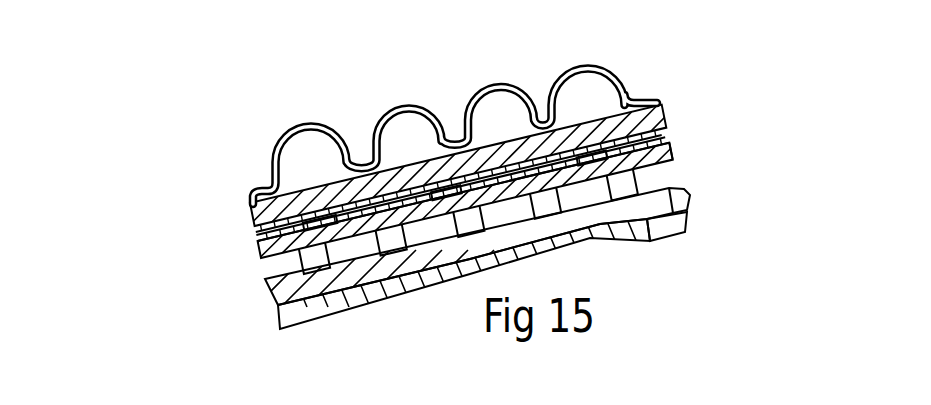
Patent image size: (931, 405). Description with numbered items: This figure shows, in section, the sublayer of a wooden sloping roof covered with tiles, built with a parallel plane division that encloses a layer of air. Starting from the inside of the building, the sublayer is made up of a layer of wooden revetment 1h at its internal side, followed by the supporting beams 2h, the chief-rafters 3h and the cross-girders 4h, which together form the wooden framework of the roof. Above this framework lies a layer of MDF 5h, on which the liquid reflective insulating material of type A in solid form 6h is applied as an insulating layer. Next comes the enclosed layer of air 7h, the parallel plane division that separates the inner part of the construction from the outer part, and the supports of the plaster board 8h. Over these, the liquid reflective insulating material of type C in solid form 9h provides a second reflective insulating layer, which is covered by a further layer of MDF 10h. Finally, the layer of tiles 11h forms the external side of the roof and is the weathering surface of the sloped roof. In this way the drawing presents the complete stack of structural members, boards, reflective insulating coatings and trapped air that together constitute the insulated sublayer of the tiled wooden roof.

The layer of wooden revetment 1h is at (388, 290).
The supporting beams 2h is at (663, 233).
The chief-rafters 3h is at (670, 187).
The cross-girders 4h is at (300, 257).
The layer of MDF 5h is at (673, 148).
The liquid reflective insulating material, type A in solid form 6h is at (253, 228).
The enclosed layer of air 7h is at (250, 231).
The supports of the plaster board 8h is at (615, 139).
The liquid reflective insulating material, type C in solid form 9h is at (250, 223).
The layer of MDF 10h is at (295, 191).
The layer of tiles 11h is at (403, 104).